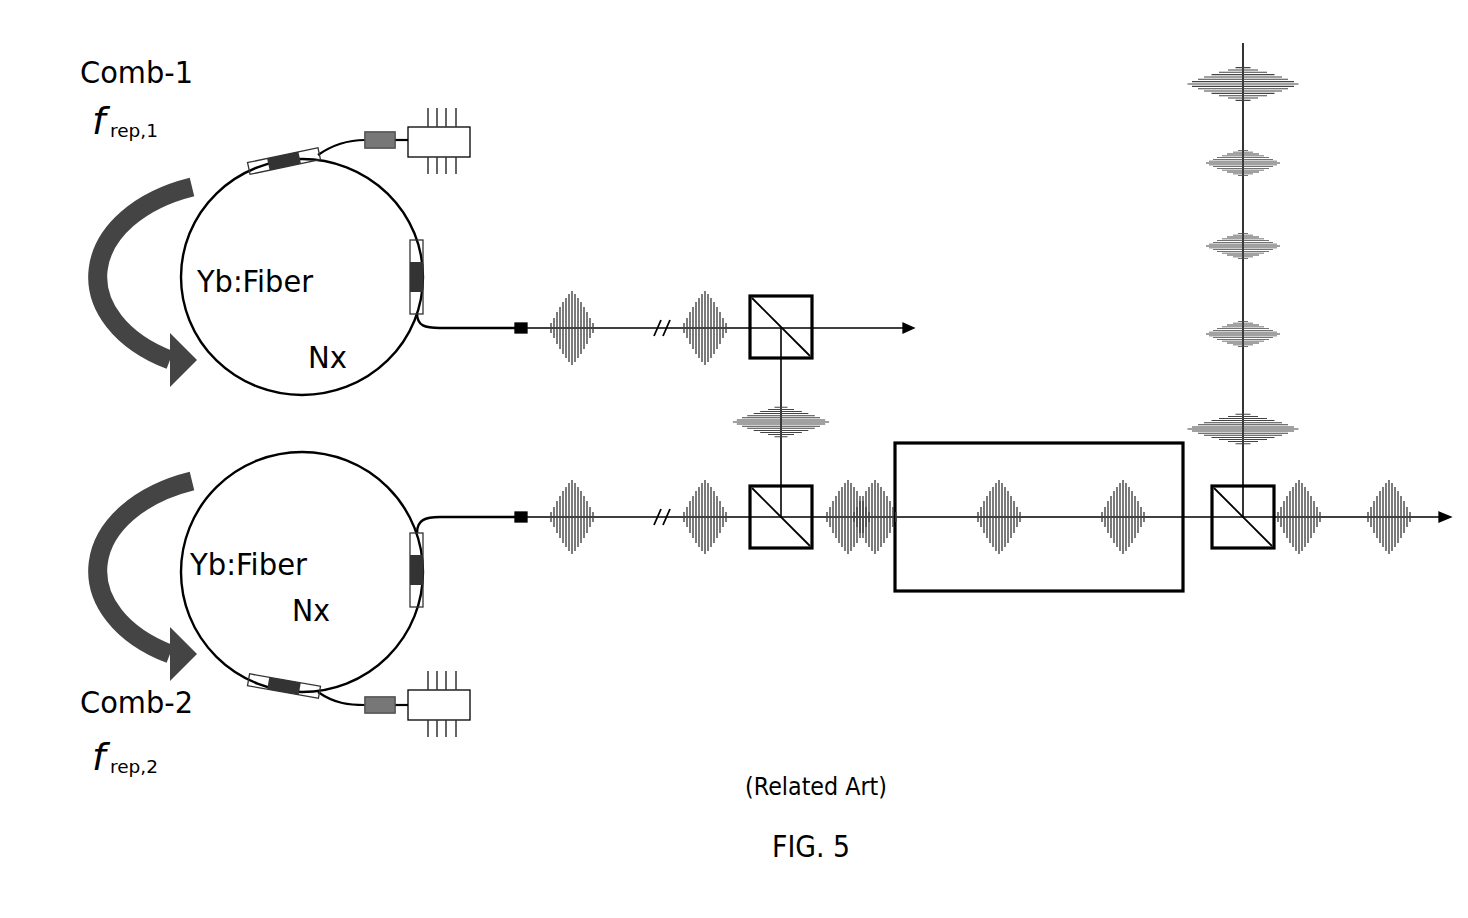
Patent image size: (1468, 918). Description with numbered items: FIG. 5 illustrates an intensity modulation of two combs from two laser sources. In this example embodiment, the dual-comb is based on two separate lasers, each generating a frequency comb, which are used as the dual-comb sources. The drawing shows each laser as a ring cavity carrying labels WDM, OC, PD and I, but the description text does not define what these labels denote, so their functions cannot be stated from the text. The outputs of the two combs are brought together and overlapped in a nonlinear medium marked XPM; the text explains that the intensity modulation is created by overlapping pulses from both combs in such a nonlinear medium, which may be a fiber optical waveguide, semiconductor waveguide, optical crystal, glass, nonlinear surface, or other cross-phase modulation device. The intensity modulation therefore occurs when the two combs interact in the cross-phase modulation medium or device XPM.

The wavelength division multiplexer WDM is at (295, 423).
The output coupler OC is at (444, 423).
The photodetector PD is at (443, 422).
The isolator I is at (380, 102).
The cross-phase modulation medium XPM is at (1039, 517).